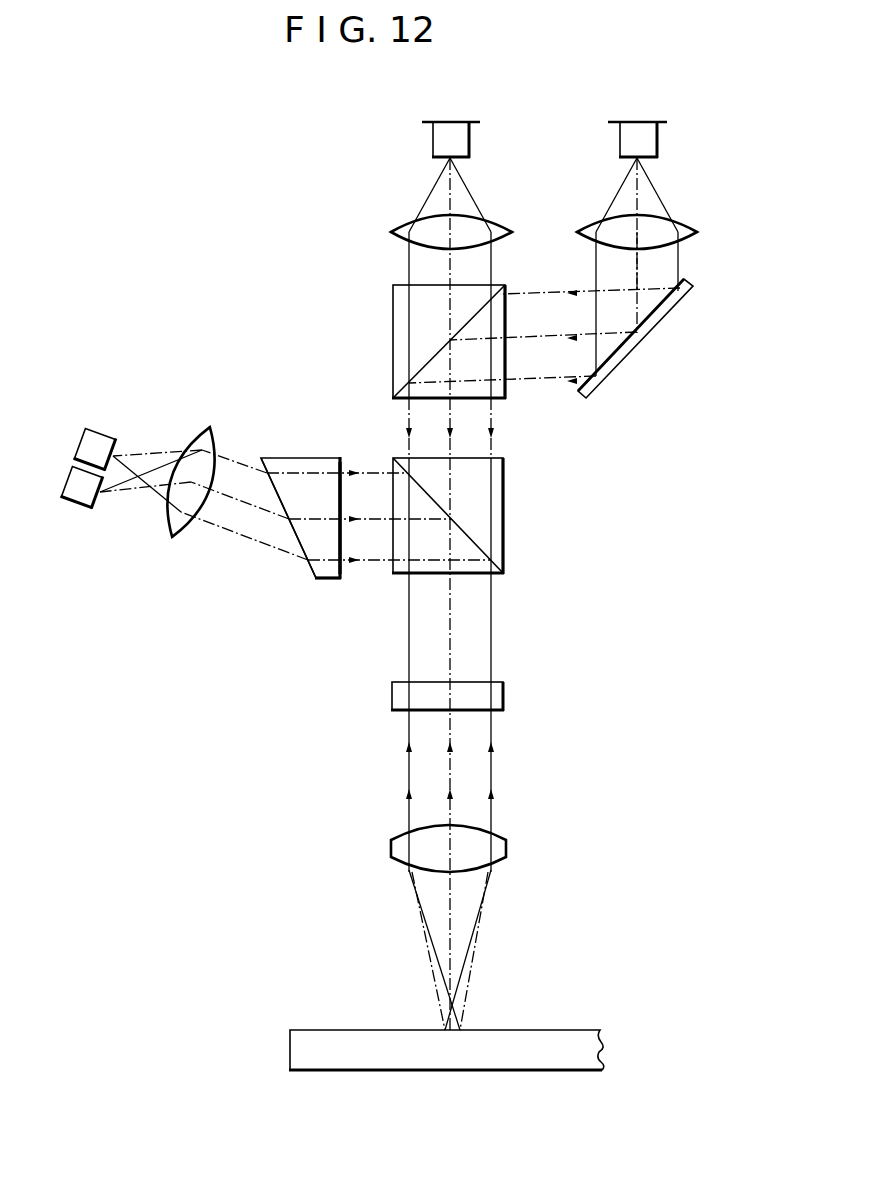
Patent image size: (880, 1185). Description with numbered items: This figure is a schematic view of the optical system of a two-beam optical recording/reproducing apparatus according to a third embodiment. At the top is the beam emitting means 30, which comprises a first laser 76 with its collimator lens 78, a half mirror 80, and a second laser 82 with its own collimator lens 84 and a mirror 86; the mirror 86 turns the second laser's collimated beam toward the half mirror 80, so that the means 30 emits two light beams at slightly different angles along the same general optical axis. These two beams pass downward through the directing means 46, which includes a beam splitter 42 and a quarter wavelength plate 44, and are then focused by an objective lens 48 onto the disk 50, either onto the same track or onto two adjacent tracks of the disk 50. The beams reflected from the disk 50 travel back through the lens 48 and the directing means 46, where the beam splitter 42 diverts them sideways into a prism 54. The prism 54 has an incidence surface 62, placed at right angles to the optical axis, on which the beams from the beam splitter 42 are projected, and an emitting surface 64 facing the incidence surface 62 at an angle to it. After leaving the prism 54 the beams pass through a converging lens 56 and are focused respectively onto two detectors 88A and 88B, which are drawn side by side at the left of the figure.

The beam emitting means 30 is at (548, 155).
The beam splitter 42 is at (503, 518).
The quarter wavelength plate 44 is at (503, 696).
The directing means 46 is at (530, 575).
The objective lens 48 is at (506, 850).
The disk 50 is at (558, 1030).
The prism 54 is at (328, 581).
The converging lens 56 is at (173, 537).
The incidence surface 62 is at (340, 460).
The emitting surface 64 is at (299, 546).
The first laser 76 is at (432, 140).
The collimator lens 78 is at (400, 227).
The half mirror 80 is at (394, 331).
The second laser 82 is at (657, 140).
The collimator lens 84 is at (695, 232).
The mirror 86 is at (672, 308).
The detector 88A is at (93, 428).
The detector 88B is at (73, 508).